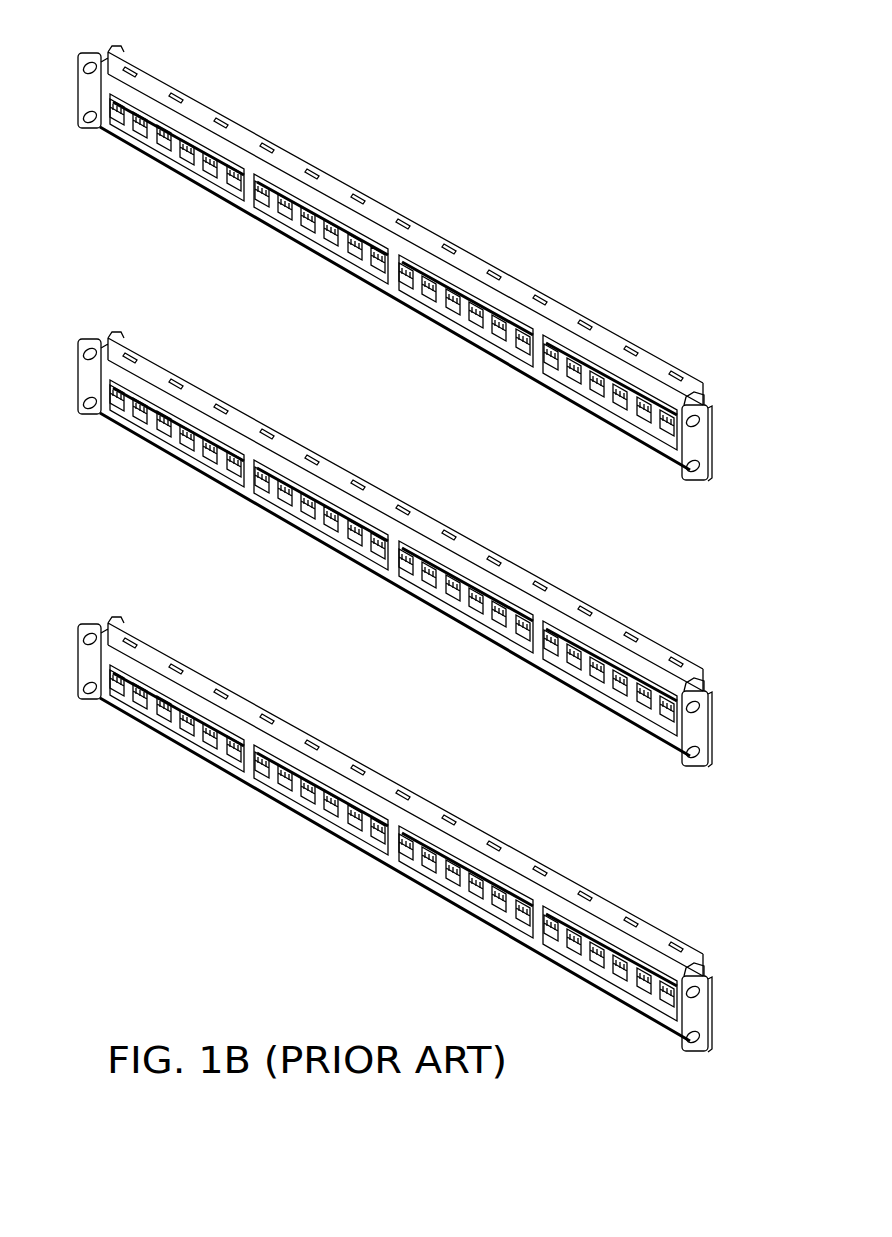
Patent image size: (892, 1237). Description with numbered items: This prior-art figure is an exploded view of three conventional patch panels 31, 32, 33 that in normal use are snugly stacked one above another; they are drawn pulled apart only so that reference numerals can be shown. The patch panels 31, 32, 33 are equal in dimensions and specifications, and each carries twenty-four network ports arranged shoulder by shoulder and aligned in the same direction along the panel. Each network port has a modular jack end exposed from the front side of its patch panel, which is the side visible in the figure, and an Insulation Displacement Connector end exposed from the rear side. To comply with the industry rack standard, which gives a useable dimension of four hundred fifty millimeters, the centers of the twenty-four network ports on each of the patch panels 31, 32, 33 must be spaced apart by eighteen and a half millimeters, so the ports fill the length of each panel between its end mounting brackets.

The patch panel 31 is at (80, 93).
The patch panel 32 is at (80, 379).
The patch panel 33 is at (80, 664).